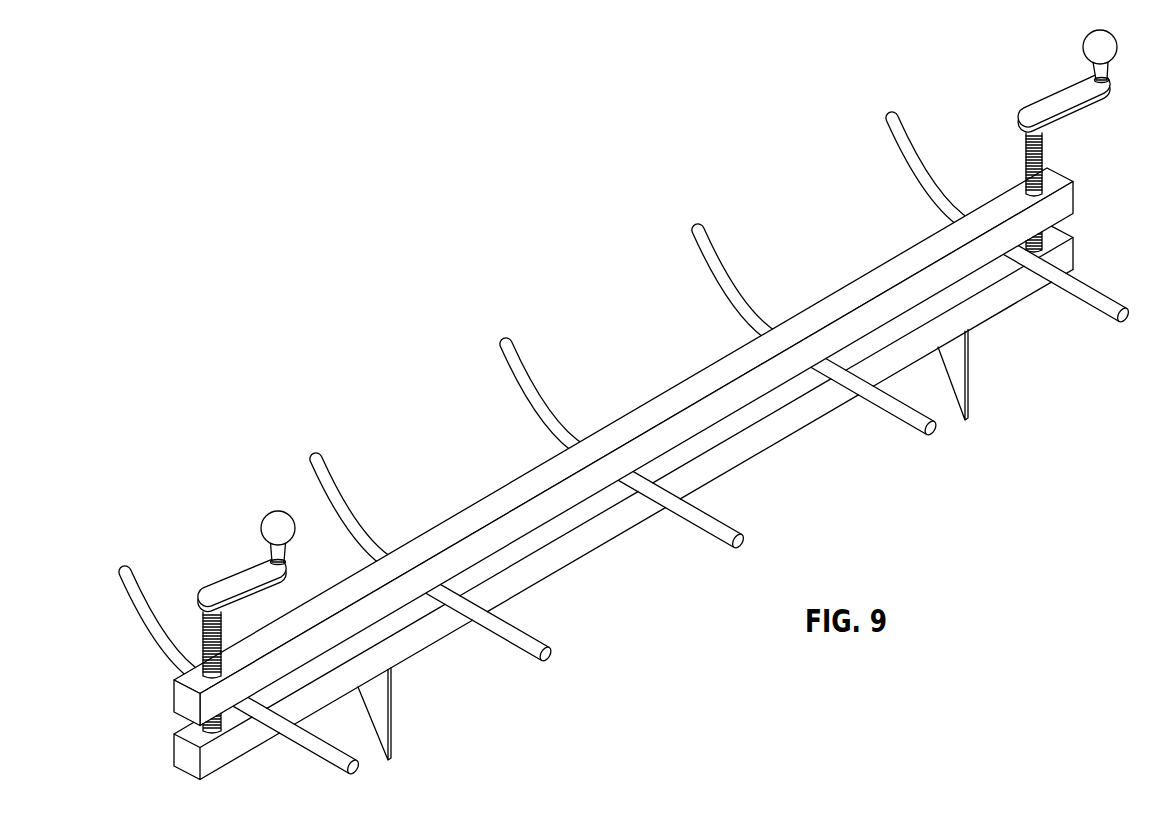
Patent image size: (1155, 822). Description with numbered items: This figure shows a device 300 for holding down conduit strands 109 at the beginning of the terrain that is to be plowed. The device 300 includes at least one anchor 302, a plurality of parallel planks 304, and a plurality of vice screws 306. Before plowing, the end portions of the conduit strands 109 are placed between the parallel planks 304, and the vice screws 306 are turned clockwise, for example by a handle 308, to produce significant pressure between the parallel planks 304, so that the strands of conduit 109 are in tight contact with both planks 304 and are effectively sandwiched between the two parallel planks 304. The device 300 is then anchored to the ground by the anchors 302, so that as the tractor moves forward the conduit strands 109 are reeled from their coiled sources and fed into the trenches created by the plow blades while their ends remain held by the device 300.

The device 300 is at (625, 177).
The anchor 302 is at (378, 710).
The parallel planks 304 is at (503, 492).
The vice screw 306 is at (212, 635).
The handle 308 is at (230, 583).
The conduit strands 109 is at (141, 603).